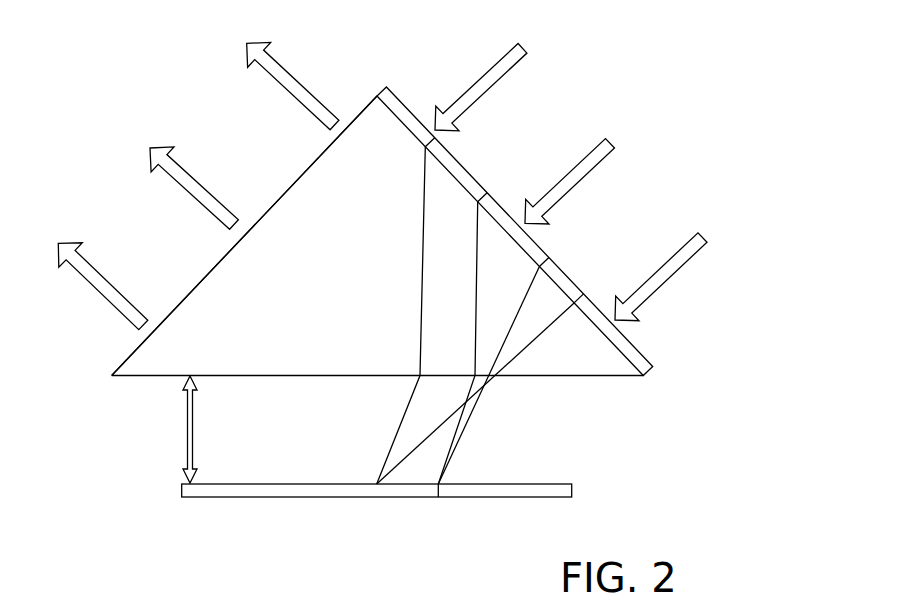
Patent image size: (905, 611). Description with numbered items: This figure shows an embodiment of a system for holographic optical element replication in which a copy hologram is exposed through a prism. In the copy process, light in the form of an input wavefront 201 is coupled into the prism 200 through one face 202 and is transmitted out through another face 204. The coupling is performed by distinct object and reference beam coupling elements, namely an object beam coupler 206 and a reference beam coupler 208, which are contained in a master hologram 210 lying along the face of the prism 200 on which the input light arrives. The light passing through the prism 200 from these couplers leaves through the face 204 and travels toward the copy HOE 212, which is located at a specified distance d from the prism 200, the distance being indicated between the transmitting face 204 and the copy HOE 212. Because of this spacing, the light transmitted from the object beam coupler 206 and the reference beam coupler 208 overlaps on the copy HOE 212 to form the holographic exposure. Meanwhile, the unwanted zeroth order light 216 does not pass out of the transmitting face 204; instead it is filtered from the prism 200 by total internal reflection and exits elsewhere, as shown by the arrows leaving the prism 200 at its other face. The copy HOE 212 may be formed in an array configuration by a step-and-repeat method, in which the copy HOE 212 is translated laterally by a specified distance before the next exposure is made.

The prism 200 is at (367, 123).
The input wavefront 201 is at (615, 143).
The face of the prism 202 is at (403, 98).
The another face of the prism 204 is at (300, 177).
The object beam coupler 206 is at (567, 282).
The reference beam coupler 208 is at (465, 175).
The master hologram 210 is at (637, 355).
The copy HOE 212 is at (553, 487).
The zeroth order light 216 is at (150, 155).
The distance d is at (181, 429).